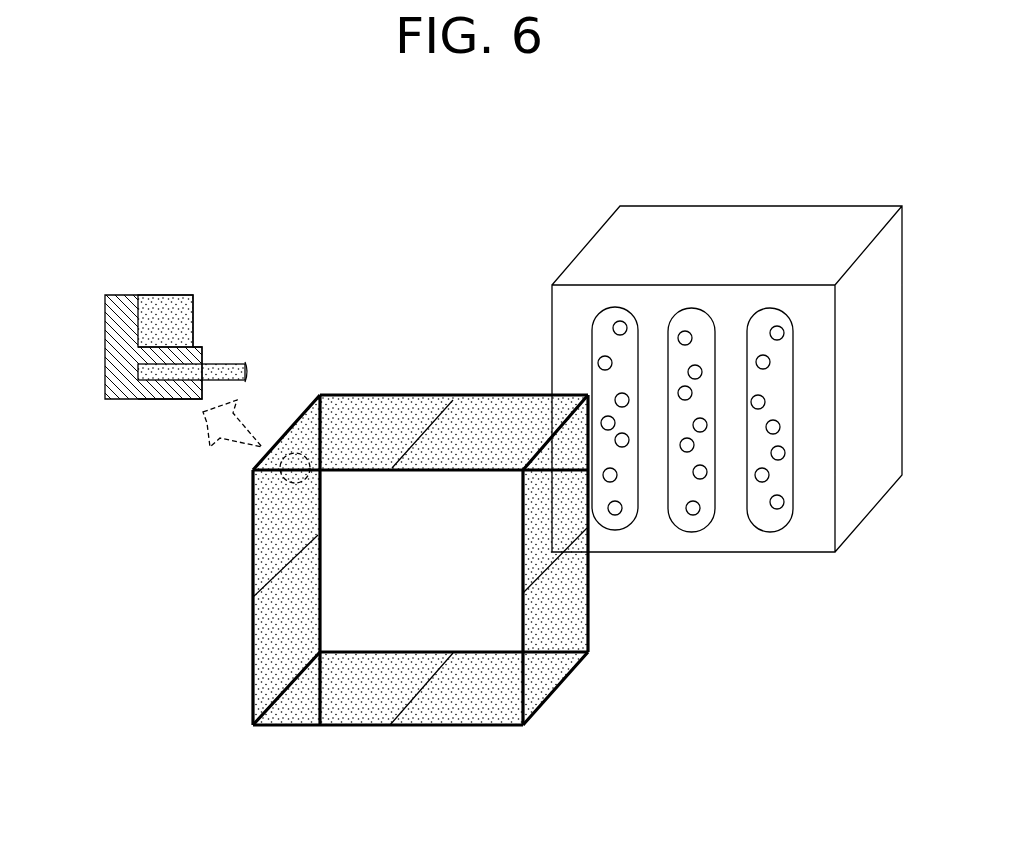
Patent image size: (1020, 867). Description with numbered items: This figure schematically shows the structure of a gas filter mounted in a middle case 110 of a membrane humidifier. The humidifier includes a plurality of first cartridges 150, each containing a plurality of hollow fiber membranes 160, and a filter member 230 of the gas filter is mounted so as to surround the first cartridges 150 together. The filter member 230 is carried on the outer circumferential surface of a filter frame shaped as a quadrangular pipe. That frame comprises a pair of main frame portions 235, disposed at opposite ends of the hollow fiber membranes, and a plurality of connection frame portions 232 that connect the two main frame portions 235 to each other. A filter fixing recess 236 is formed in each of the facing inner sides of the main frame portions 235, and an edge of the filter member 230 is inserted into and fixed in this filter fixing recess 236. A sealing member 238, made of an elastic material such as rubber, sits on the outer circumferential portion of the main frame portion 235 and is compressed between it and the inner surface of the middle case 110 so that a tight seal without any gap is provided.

The middle case 110 is at (620, 252).
The first cartridge 150 is at (703, 490).
The hollow fiber membrane 160 is at (690, 510).
The filter member 230 is at (385, 412).
The connection frame portion 232 is at (287, 557).
The main frame portion 235 is at (590, 608).
The filter fixing recess 236 is at (165, 378).
The sealing member 238 is at (167, 305).